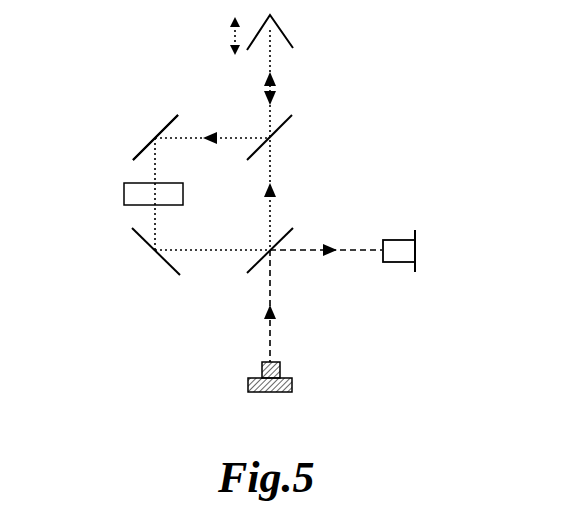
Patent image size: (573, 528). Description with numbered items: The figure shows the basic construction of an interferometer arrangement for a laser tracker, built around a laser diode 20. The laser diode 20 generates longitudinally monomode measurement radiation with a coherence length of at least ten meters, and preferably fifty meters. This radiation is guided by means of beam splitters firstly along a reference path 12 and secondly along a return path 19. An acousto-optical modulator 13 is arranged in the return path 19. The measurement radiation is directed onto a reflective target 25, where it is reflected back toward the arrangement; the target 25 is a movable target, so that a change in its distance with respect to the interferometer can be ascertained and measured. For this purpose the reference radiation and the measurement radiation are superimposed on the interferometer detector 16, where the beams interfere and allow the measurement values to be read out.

The reflective target 25 is at (308, 29).
The return path 19 is at (179, 119).
The acousto-optical modulator 13 is at (114, 180).
The reference path 12 is at (315, 267).
The interferometer detector 16 is at (430, 230).
The laser diode 20 is at (237, 368).